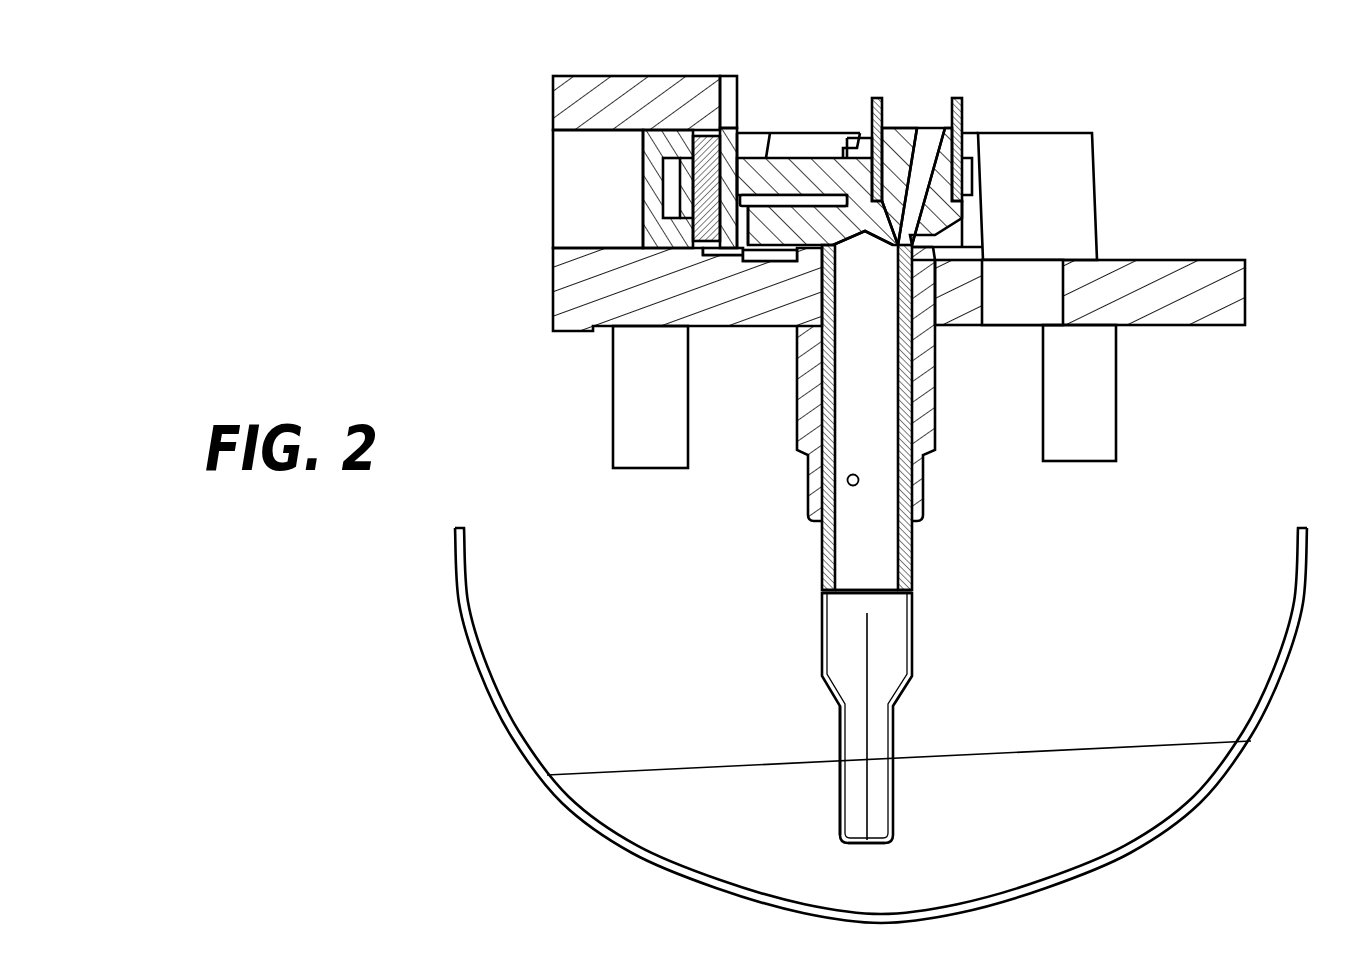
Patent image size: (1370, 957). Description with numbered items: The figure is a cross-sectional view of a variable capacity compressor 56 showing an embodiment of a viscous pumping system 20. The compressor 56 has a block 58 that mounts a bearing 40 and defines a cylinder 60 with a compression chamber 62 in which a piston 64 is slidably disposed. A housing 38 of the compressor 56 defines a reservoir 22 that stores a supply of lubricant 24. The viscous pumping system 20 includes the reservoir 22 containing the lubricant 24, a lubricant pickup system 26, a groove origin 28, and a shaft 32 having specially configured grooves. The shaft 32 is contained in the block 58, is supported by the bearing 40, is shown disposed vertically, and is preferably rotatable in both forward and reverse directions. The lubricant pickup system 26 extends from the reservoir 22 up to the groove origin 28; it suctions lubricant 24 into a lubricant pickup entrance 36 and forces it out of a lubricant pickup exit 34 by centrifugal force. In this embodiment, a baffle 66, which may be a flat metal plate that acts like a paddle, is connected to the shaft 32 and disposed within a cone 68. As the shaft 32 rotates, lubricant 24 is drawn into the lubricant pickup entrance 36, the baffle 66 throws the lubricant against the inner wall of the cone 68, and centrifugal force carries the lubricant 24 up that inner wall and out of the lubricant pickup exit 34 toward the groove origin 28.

The viscous pumping system 20 is at (946, 483).
The reservoir 22 is at (1136, 851).
The lubricant 24 is at (1153, 802).
The lubricant pickup system 26 is at (914, 680).
The groove origin 28 is at (846, 478).
The shaft 32 is at (847, 545).
The lubricant pickup exit 34 is at (860, 480).
The lubricant pickup entrance 36 is at (860, 842).
The housing 38 is at (1293, 610).
The bearing 40 is at (806, 343).
The compressor 56 is at (1202, 172).
The block 58 is at (1190, 307).
The cylinder 60 is at (535, 165).
The compression chamber 62 is at (562, 222).
The piston 64 is at (662, 140).
The baffle 66 is at (868, 732).
The cone 68 is at (840, 718).